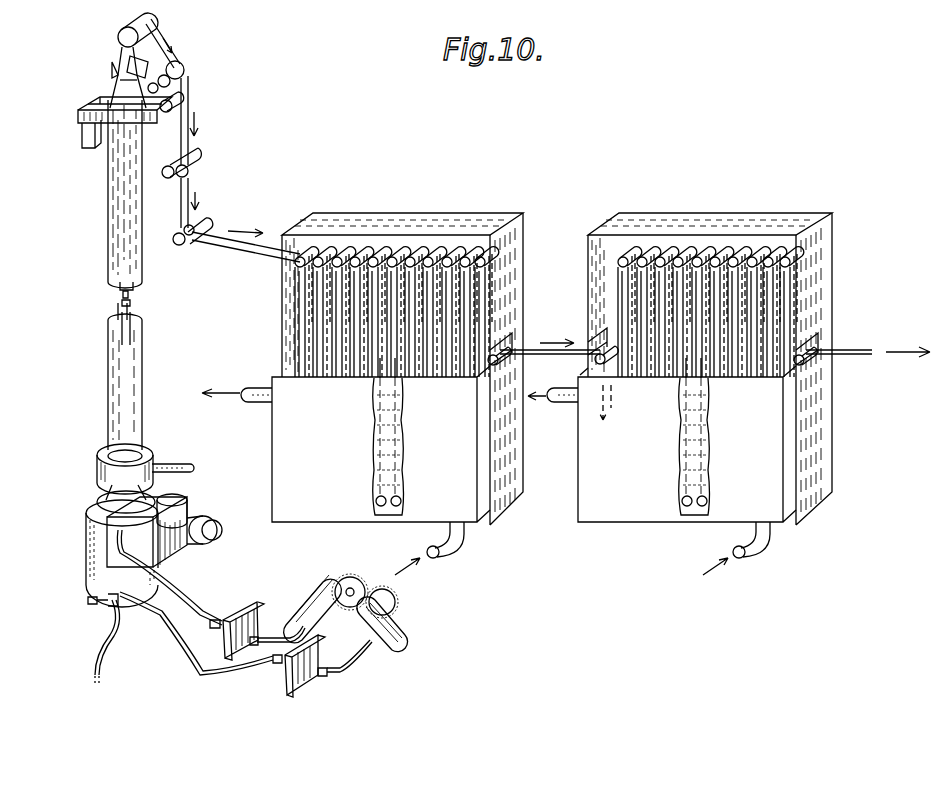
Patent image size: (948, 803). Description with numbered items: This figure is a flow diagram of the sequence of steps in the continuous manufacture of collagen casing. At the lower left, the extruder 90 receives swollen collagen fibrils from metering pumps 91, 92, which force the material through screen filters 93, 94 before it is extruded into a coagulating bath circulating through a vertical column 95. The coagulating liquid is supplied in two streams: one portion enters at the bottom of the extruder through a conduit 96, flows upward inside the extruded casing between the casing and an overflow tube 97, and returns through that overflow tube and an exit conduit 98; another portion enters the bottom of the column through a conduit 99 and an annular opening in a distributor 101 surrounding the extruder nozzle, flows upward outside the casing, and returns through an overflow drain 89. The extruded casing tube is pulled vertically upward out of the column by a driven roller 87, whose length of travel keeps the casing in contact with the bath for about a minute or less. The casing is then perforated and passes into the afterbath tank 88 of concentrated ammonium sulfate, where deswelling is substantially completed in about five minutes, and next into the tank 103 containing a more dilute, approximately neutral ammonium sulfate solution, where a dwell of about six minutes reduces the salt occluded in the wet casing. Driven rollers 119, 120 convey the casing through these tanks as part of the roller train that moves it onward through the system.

The driven roller 87 is at (120, 25).
The tank 88 is at (272, 427).
The overflow drain 89 is at (82, 140).
The extruder 90 is at (95, 558).
The metering pump 91 is at (332, 587).
The metering pump 92 is at (398, 630).
The screen filter 93 is at (252, 596).
The screen filter 94 is at (285, 683).
The vertical column 95 is at (108, 218).
The conduit 96 is at (110, 647).
The overflow tube 97 is at (117, 305).
The exit conduit 98 is at (87, 600).
The conduit 99 is at (178, 466).
The distributor 101 is at (97, 448).
The tank 103 is at (828, 418).
The driven roller 119 is at (312, 245).
The driven roller 120 is at (637, 240).